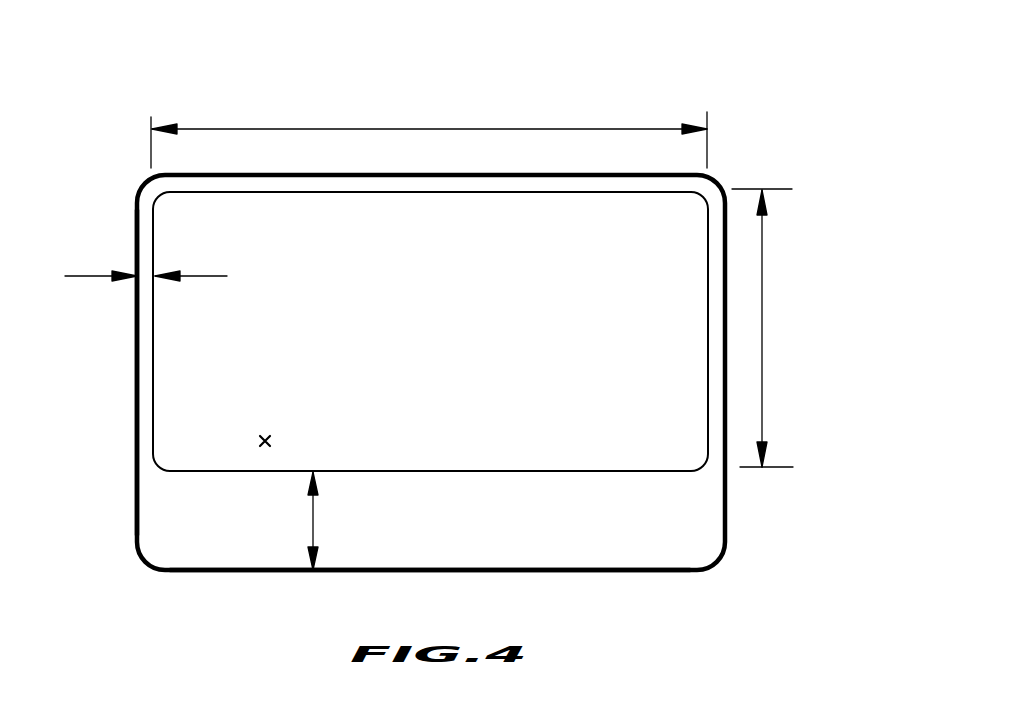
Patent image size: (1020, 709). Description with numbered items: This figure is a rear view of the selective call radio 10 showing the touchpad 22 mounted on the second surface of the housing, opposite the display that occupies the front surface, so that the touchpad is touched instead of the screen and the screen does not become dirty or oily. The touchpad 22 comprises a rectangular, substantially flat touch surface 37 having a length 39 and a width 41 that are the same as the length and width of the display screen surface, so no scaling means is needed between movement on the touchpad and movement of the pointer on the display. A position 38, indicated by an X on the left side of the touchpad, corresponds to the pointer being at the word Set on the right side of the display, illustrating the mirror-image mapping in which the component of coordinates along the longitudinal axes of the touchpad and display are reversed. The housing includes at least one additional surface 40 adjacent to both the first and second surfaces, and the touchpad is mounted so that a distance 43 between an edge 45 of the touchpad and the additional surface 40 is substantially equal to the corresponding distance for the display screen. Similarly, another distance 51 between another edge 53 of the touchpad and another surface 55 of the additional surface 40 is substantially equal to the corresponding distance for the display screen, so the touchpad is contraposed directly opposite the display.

The selective call radio 10 is at (427, 162).
The touchpad 22 is at (648, 297).
The touch surface 37 is at (682, 340).
The position 38 is at (258, 438).
The length 39 is at (497, 128).
The additional surface 40 is at (152, 210).
The width 41 is at (763, 363).
The distance 43 is at (92, 278).
The edge 45 is at (152, 245).
The distance 51 is at (313, 515).
The edge 53 is at (545, 468).
The surface 55 is at (637, 570).